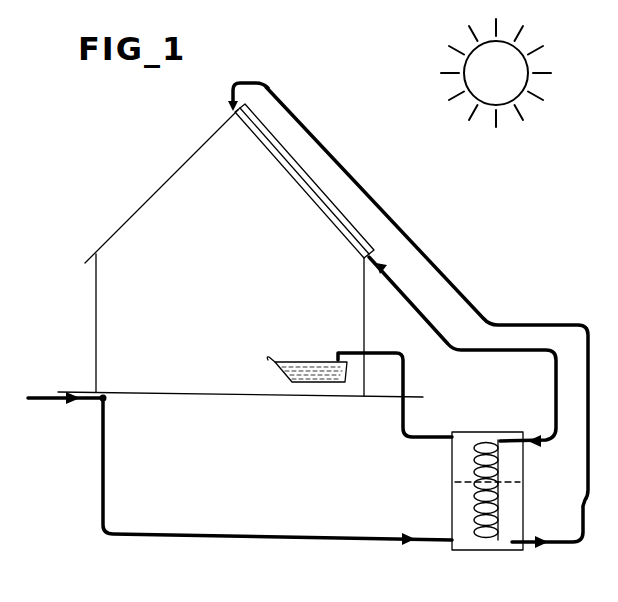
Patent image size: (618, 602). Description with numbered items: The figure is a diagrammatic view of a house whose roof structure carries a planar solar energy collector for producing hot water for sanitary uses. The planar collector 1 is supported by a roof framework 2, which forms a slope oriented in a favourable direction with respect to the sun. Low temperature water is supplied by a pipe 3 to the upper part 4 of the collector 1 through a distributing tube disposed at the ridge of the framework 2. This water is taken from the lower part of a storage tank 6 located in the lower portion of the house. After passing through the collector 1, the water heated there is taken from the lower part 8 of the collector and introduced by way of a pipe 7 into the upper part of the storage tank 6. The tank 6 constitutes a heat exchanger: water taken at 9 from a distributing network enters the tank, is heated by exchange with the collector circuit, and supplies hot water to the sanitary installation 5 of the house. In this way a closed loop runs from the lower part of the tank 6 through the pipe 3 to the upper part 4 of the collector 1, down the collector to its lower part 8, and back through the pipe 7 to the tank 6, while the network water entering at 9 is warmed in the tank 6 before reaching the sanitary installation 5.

The planar collector 1 is at (318, 176).
The roof framework 2 is at (284, 176).
The pipe 3 is at (468, 296).
The upper part of the collector 4 is at (232, 108).
The sanitary installation 5 is at (335, 354).
The storage tank 6 is at (452, 496).
The pipe 7 is at (472, 352).
The lower part of the collector 8 is at (374, 255).
The water intake point 9 is at (106, 401).